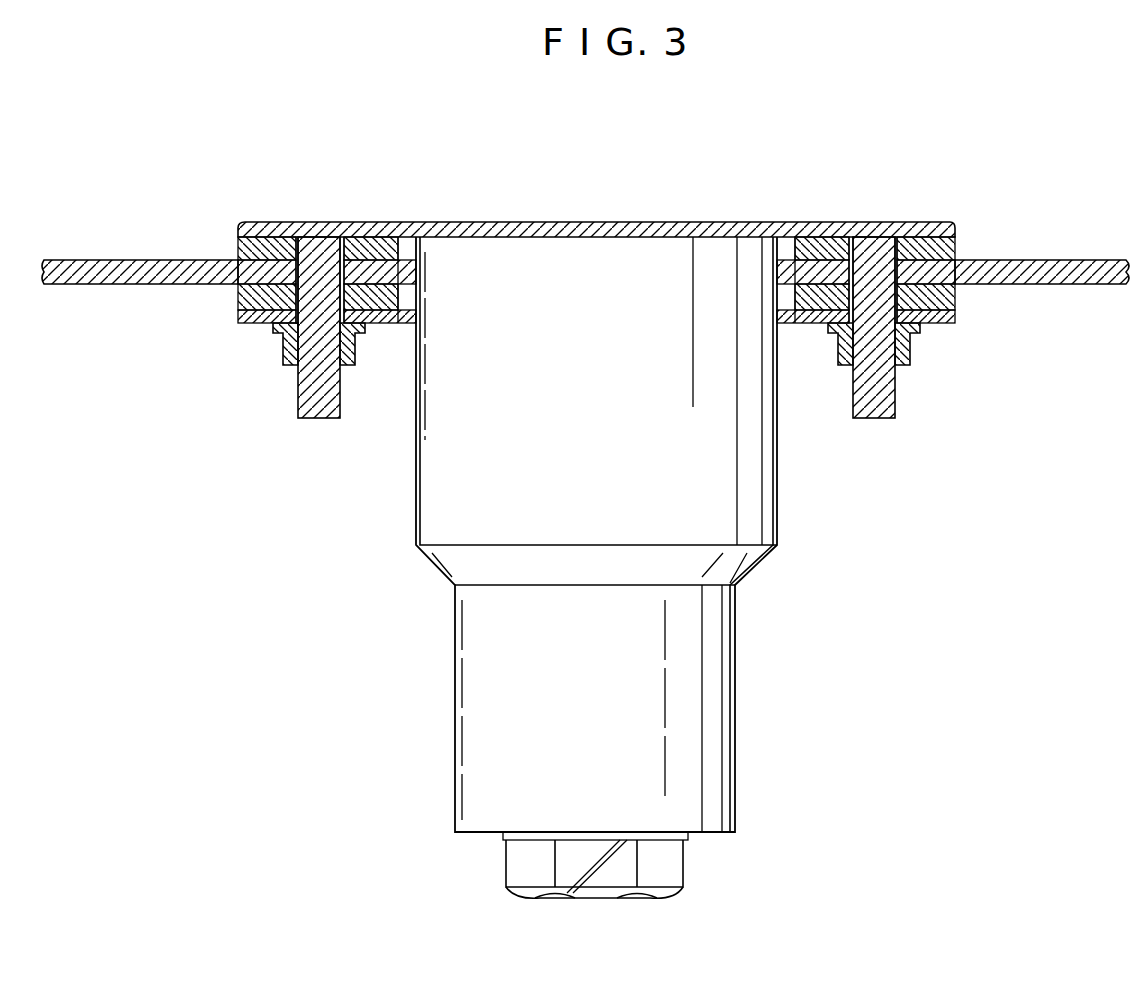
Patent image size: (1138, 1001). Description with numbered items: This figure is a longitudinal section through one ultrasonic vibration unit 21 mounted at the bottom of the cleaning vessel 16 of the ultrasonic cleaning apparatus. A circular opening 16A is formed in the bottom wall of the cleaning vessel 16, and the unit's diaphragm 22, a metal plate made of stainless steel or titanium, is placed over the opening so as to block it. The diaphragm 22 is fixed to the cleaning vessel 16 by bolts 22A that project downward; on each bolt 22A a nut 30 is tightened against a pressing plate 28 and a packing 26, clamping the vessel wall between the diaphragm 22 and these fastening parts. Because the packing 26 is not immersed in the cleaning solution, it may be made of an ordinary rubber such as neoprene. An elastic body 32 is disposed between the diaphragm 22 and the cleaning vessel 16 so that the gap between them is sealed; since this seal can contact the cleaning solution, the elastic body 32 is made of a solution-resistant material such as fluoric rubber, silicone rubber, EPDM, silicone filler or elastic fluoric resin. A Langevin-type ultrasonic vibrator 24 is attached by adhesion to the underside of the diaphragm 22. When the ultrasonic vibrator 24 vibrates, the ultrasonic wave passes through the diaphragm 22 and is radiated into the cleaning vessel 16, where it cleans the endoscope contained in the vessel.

The cleaning vessel 16 is at (108, 259).
The circular opening 16A is at (309, 230).
The ultrasonic vibration unit 21 is at (655, 187).
The diaphragm 22 is at (503, 222).
The bolt 22A is at (313, 420).
The ultrasonic vibrator 24 is at (758, 513).
The packing 26 is at (237, 297).
The pressing plate 28 is at (240, 323).
The nut 30 is at (283, 350).
The elastic body 32 is at (237, 245).